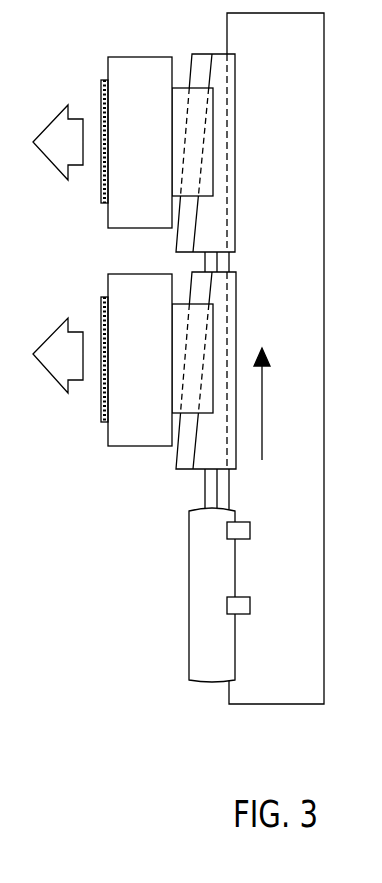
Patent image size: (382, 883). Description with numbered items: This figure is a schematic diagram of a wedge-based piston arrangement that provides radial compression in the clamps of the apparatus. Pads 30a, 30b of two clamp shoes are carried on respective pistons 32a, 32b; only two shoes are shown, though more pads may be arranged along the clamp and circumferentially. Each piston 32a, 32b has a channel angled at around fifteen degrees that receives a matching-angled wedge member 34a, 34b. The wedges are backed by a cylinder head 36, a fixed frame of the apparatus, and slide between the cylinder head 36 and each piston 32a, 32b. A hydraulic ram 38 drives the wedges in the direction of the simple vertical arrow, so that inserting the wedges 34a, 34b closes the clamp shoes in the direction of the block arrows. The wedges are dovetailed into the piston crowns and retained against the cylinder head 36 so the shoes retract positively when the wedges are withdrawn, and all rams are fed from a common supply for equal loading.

The pad 30a is at (102, 93).
The pad 30b is at (102, 309).
The piston 32a is at (110, 229).
The piston 32b is at (110, 446).
The wedge member 34a is at (178, 231).
The wedge member 34b is at (178, 448).
The cylinder head 36 is at (229, 704).
The hydraulic ram 38 is at (189, 630).